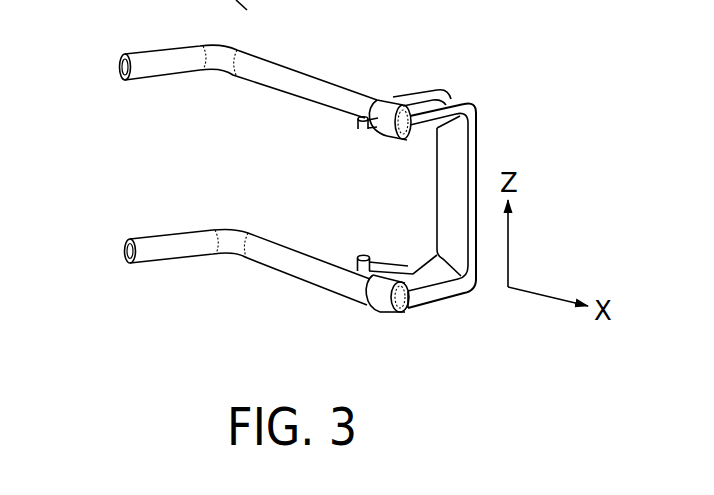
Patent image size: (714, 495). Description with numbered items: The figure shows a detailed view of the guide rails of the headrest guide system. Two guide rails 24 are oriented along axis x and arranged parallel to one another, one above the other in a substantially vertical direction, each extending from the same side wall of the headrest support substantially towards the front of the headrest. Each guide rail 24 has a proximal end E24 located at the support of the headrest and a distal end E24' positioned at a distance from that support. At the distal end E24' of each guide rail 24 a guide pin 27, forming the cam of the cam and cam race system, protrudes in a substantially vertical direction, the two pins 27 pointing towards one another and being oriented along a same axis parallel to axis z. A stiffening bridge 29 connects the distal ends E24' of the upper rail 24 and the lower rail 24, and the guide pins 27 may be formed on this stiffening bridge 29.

The guide rail 24 is at (268, 100).
The proximal end E24 is at (82, 189).
The distal end E24' is at (392, 196).
The guide pin 27 is at (358, 133).
The stiffening bridge 29 is at (487, 138).